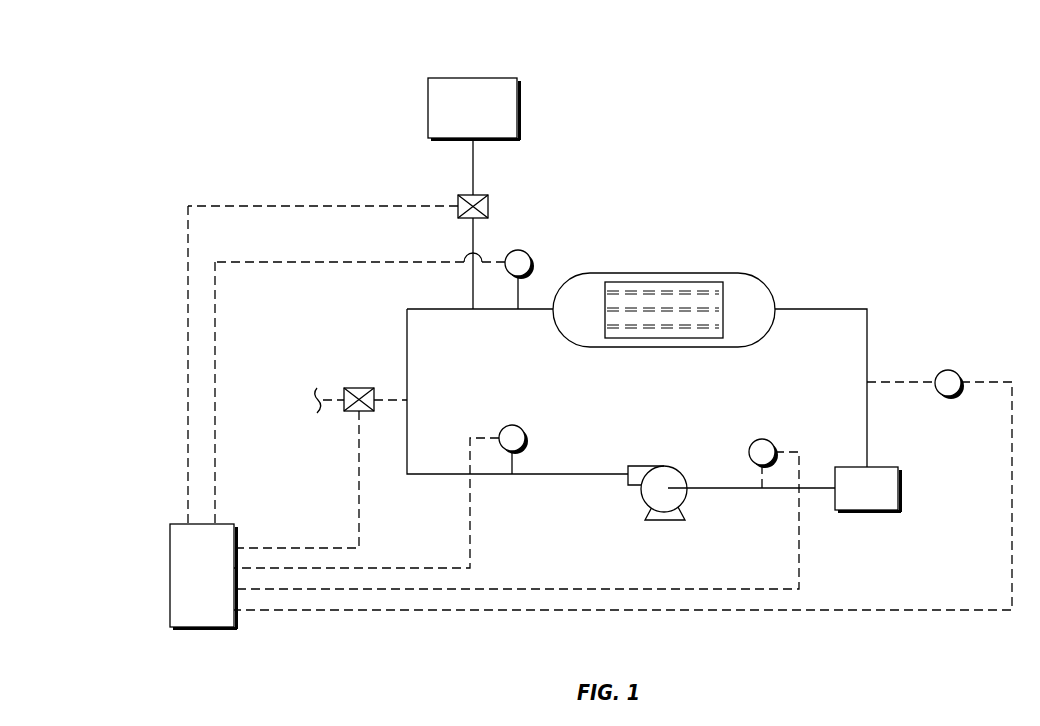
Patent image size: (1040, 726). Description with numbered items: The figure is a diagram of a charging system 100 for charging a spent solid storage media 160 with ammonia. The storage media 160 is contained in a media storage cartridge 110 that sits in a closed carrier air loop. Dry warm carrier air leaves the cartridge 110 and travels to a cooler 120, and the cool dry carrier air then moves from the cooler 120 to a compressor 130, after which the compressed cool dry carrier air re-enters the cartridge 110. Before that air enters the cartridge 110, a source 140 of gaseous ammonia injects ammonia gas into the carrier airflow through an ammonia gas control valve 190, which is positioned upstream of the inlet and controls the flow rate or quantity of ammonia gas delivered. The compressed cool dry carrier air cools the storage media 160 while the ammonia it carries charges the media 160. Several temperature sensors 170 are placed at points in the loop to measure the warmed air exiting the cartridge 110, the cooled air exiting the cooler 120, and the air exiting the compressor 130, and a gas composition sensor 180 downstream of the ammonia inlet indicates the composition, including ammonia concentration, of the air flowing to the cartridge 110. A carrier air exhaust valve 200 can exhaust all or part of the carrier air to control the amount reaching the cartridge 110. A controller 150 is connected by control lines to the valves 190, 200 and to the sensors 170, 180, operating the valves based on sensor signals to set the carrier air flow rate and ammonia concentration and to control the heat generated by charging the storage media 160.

The charging system 100 is at (230, 96).
The media storage cartridge 110 is at (640, 273).
The cooler 120 is at (882, 498).
The compressor 130 is at (658, 466).
The source of gaseous ammonia 140 is at (438, 78).
The controller 150 is at (218, 584).
The solid storage media 160 is at (693, 282).
The temperature sensors 170 is at (508, 425).
The gas composition sensor 180 is at (518, 249).
The ammonia gas control valve 190 is at (469, 195).
The carrier air exhaust valve 200 is at (358, 388).